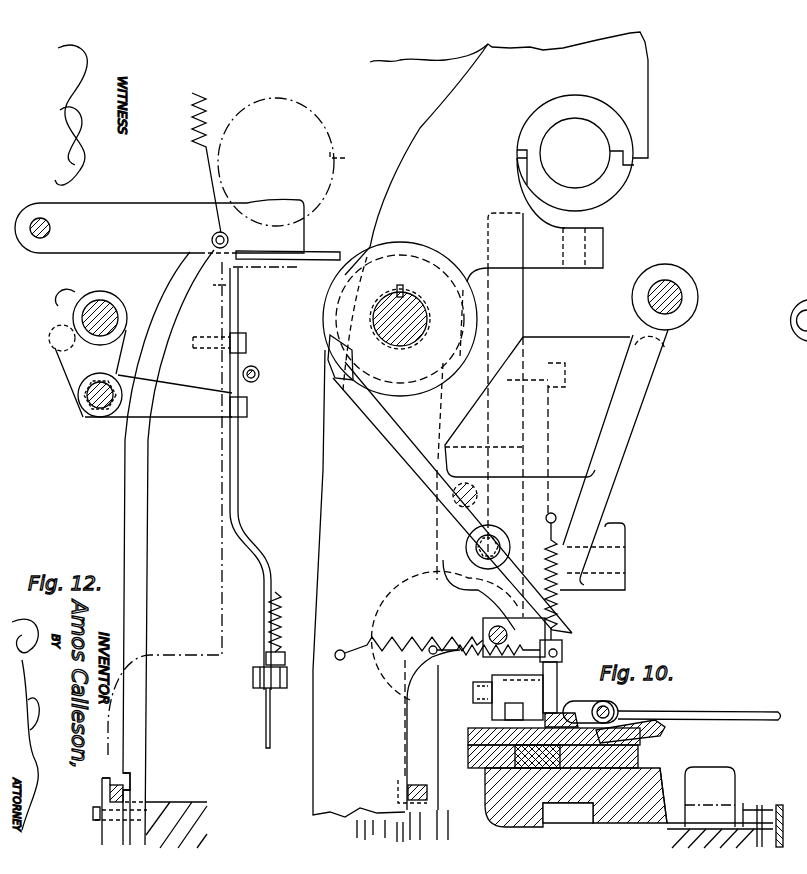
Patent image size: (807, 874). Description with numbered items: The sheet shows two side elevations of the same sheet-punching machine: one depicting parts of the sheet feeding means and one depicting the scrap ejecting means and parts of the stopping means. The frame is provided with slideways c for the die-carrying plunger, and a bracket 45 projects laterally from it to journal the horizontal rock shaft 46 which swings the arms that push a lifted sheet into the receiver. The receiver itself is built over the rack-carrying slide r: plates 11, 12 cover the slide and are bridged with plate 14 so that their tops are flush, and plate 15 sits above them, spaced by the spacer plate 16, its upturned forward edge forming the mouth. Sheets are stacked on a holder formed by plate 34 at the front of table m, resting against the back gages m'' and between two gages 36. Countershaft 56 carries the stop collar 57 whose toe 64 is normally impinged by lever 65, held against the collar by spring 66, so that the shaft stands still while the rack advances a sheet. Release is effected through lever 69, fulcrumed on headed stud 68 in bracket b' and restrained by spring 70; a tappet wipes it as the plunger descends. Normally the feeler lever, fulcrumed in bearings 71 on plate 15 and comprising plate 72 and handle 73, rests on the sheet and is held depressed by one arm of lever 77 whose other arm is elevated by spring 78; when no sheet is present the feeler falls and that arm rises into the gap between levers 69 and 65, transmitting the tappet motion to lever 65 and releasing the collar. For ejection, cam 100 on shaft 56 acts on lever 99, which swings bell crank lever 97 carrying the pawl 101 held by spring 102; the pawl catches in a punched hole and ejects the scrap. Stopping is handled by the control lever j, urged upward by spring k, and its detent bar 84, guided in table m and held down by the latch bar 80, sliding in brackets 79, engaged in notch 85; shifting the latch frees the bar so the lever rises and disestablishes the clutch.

In FIG. 12, the spring k is at (194, 163).
In FIG. 12, the control lever j is at (308, 222).
In FIG. 12, the slideways c is at (216, 287).
In FIG. 12, the cam 100 is at (80, 293).
In FIG. 12, the countershaft 56 is at (120, 309).
In FIG. 10, the countershaft 56 is at (400, 317).
In FIG. 12, the lever 99 is at (172, 388).
In FIG. 12, the bell crank lever 97 is at (240, 478).
In FIG. 12, the spring 102 is at (273, 627).
In FIG. 12, the pawl 101 is at (268, 712).
In FIG. 12, the detent bar 84 is at (143, 712).
In FIG. 10, the detent bar 84 is at (423, 737).
In FIG. 12, the notch 85 is at (131, 782).
In FIG. 10, the notch 85 is at (430, 792).
In FIG. 12, the latch bar 80 is at (110, 793).
In FIG. 10, the latch bar 80 is at (406, 792).
In FIG. 12, the brackets 79 is at (82, 745).
In FIG. 12, the table m is at (176, 825).
In FIG. 10, the table m is at (646, 808).
In FIG. 10, the stop collar 57 is at (443, 260).
In FIG. 10, the toe 64 is at (330, 368).
In FIG. 10, the lever 65 is at (409, 475).
In FIG. 10, the lever 69 is at (550, 643).
In FIG. 10, the bracket b' is at (444, 635).
In FIG. 10, the spring 66 is at (437, 638).
In FIG. 10, the spring 78 is at (557, 600).
In FIG. 10, the spring 70 is at (470, 658).
In FIG. 10, the headed stud 68 is at (562, 657).
In FIG. 10, the lever 77 is at (491, 697).
In FIG. 10, the spacer plate 16 is at (467, 735).
In FIG. 10, the plate 15 is at (663, 727).
In FIG. 10, the plate 11 is at (468, 757).
In FIG. 10, the plate 14 is at (536, 756).
In FIG. 10, the rack-carrying slide r is at (492, 822).
In FIG. 10, the plate 12 is at (652, 752).
In FIG. 10, the back gages m'' is at (693, 795).
In FIG. 10, the gages 36 is at (722, 773).
In FIG. 10, the plate 34 is at (765, 817).
In FIG. 10, the plate 72 is at (571, 706).
In FIG. 10, the bearings 71 is at (622, 702).
In FIG. 10, the handle 73 is at (735, 711).
In FIG. 10, the rock shaft 46 is at (683, 300).
In FIG. 10, the bracket 45 is at (632, 422).